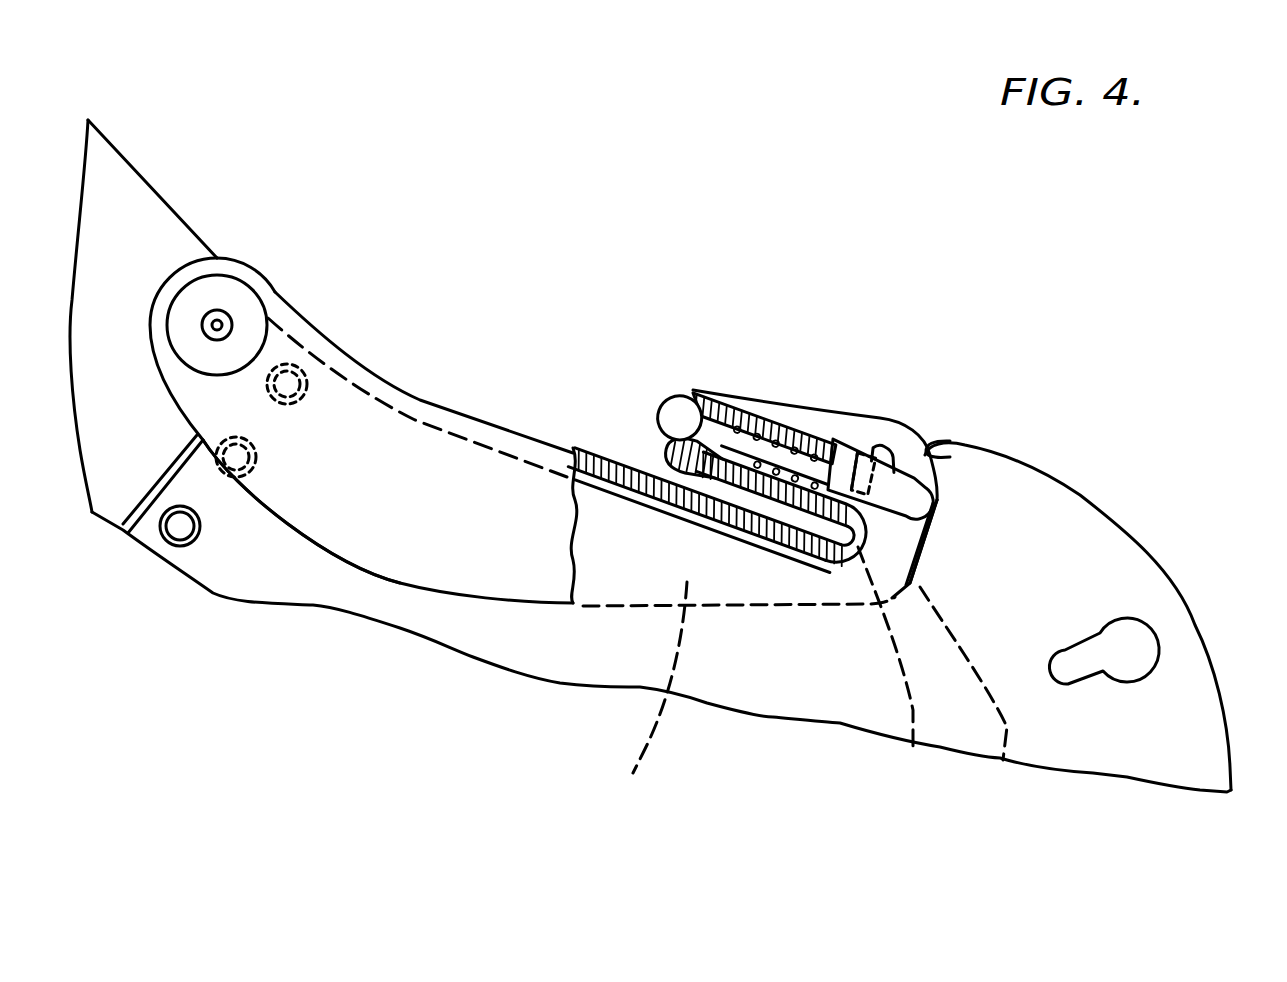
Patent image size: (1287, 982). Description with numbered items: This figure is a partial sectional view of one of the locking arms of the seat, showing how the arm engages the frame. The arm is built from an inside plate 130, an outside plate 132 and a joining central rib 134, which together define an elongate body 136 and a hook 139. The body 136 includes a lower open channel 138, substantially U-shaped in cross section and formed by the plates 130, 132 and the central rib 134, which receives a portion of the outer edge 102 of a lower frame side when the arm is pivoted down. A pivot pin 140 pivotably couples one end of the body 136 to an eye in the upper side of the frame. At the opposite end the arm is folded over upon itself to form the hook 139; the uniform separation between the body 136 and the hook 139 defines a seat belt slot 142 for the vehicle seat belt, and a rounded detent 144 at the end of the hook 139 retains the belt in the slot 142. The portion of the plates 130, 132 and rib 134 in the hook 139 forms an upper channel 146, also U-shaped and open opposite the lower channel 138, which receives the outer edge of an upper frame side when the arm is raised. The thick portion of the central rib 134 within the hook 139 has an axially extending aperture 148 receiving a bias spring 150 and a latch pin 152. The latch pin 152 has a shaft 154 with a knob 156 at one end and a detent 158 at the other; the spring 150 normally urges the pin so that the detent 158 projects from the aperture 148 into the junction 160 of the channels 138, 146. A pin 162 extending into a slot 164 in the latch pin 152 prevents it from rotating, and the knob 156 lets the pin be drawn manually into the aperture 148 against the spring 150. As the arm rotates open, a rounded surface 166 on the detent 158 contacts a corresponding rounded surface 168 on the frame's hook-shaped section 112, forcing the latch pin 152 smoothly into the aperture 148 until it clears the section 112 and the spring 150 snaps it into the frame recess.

The outer edge 102 is at (833, 560).
The hook-shaped section 112 is at (1143, 573).
The inside plate 130 is at (433, 570).
The outside plate 132 is at (633, 773).
The central rib 134 is at (515, 433).
The body 136 is at (352, 578).
The open channel 138 is at (620, 492).
The hook 139 is at (880, 452).
The pivot pin 140 is at (255, 308).
The seat belt slot 142 is at (800, 512).
The rounded detent 144 is at (674, 467).
The upper channel 146 is at (777, 392).
The aperture 148 is at (755, 425).
The bias spring 150 is at (812, 428).
The latch pin 152 is at (852, 465).
The shaft 154 is at (713, 410).
The knob 156 is at (662, 405).
The detent 158 is at (930, 504).
The junction 160 is at (1003, 760).
The pin 162 is at (885, 450).
The slot 164 is at (913, 750).
The rounded surface 166 is at (915, 502).
The rounded surface 168 is at (925, 455).